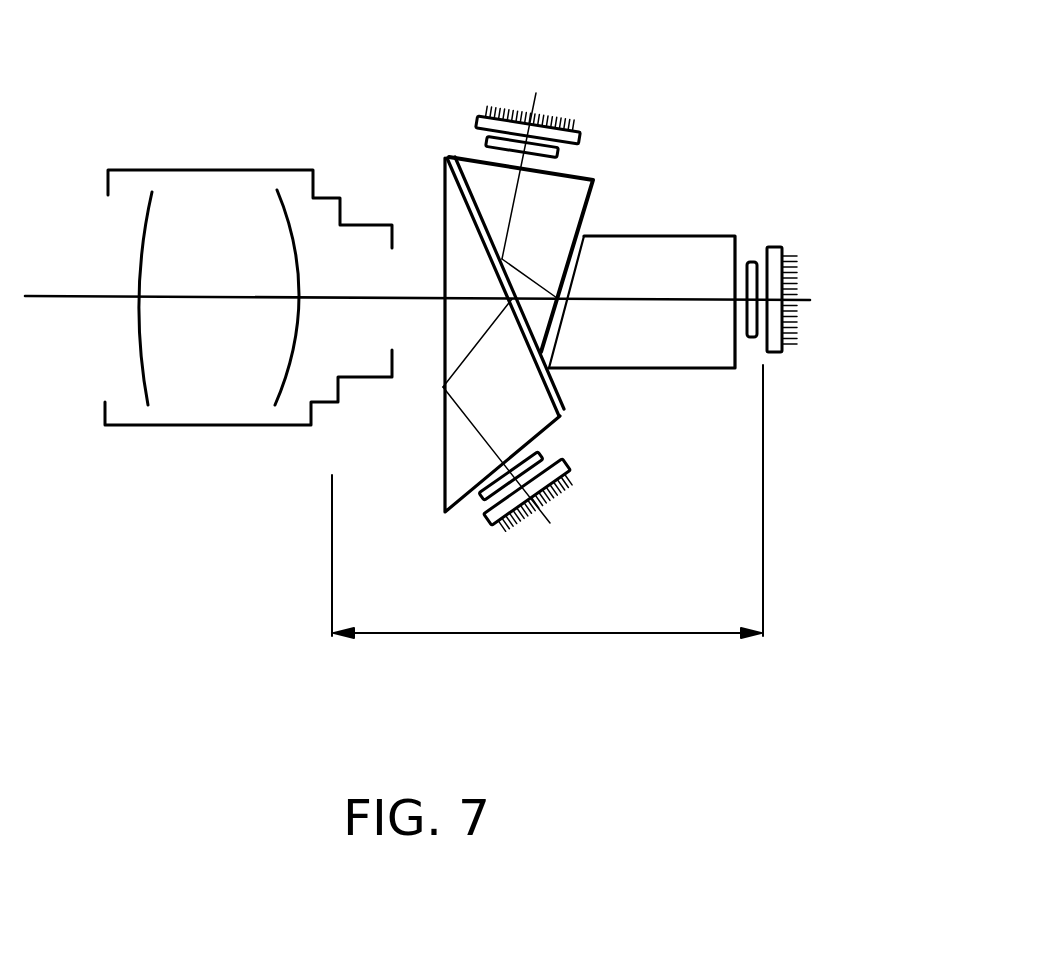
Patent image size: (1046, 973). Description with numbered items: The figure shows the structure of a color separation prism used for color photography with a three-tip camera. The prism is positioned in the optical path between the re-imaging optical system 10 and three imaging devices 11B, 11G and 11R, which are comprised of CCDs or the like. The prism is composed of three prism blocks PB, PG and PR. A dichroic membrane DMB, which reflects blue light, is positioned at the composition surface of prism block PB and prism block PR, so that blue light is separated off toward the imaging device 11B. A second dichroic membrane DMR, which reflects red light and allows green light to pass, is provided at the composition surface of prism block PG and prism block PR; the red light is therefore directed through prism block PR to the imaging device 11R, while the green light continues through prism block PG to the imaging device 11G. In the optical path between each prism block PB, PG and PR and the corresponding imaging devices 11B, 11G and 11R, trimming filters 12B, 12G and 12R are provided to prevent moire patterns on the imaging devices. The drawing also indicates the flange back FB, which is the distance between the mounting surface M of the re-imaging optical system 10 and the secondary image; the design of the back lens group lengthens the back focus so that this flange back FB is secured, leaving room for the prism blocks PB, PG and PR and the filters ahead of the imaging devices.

The re-imaging optical system 10 is at (213, 170).
The mounting surface M is at (340, 403).
The prism block PB is at (567, 405).
The dichroic membrane DMB is at (447, 163).
The prism block PR is at (617, 172).
The dichroic membrane DMR is at (582, 237).
The prism block PG is at (723, 237).
The trimming filter 12R is at (484, 146).
The imaging device 11R is at (585, 135).
The trimming filter 12G is at (752, 262).
The imaging device 11G is at (773, 353).
The trimming filter 12B is at (482, 503).
The imaging device 11B is at (533, 517).
The flange back FB is at (547, 522).